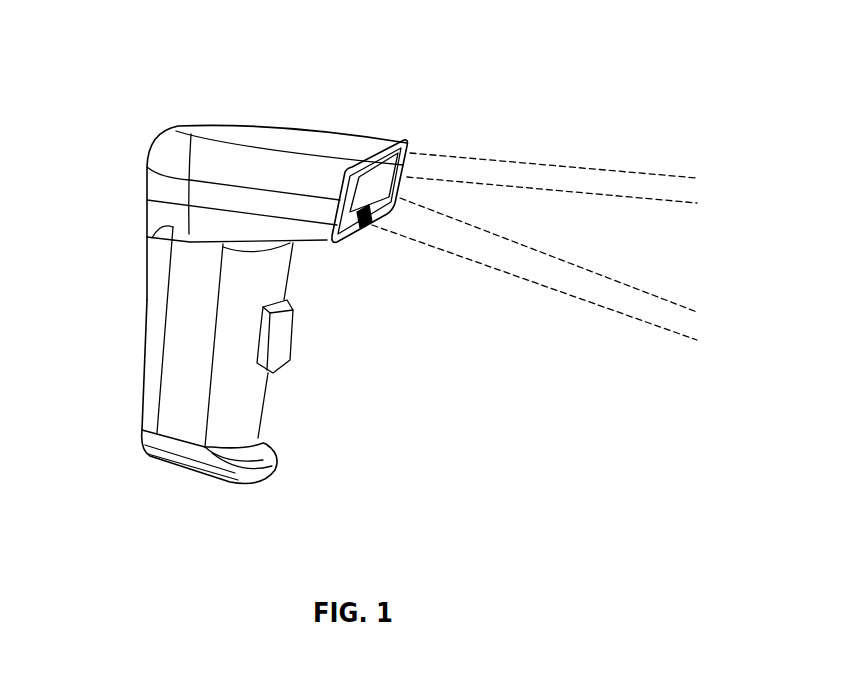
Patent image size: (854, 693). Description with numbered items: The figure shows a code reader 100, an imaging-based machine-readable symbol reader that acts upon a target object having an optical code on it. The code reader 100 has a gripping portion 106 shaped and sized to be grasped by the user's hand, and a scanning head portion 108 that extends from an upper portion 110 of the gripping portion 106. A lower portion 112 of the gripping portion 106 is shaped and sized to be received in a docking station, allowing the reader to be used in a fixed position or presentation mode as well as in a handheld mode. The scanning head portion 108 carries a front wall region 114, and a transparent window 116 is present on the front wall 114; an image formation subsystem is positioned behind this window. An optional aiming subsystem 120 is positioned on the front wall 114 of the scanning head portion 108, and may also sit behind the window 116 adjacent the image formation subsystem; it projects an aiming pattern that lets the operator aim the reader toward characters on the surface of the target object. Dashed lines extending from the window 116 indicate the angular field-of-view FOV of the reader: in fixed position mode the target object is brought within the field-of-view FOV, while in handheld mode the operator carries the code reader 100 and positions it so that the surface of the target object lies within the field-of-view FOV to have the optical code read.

The code reader 100 is at (446, 60).
The gripping portion 106 is at (101, 362).
The scanning head portion 108 is at (358, 96).
The upper portion 110 is at (163, 263).
The lower portion 112 is at (178, 468).
The front wall region 114 is at (338, 246).
The transparent window 116 is at (412, 162).
The aiming subsystem 120 is at (380, 232).
The field-of-view FOV is at (582, 165).